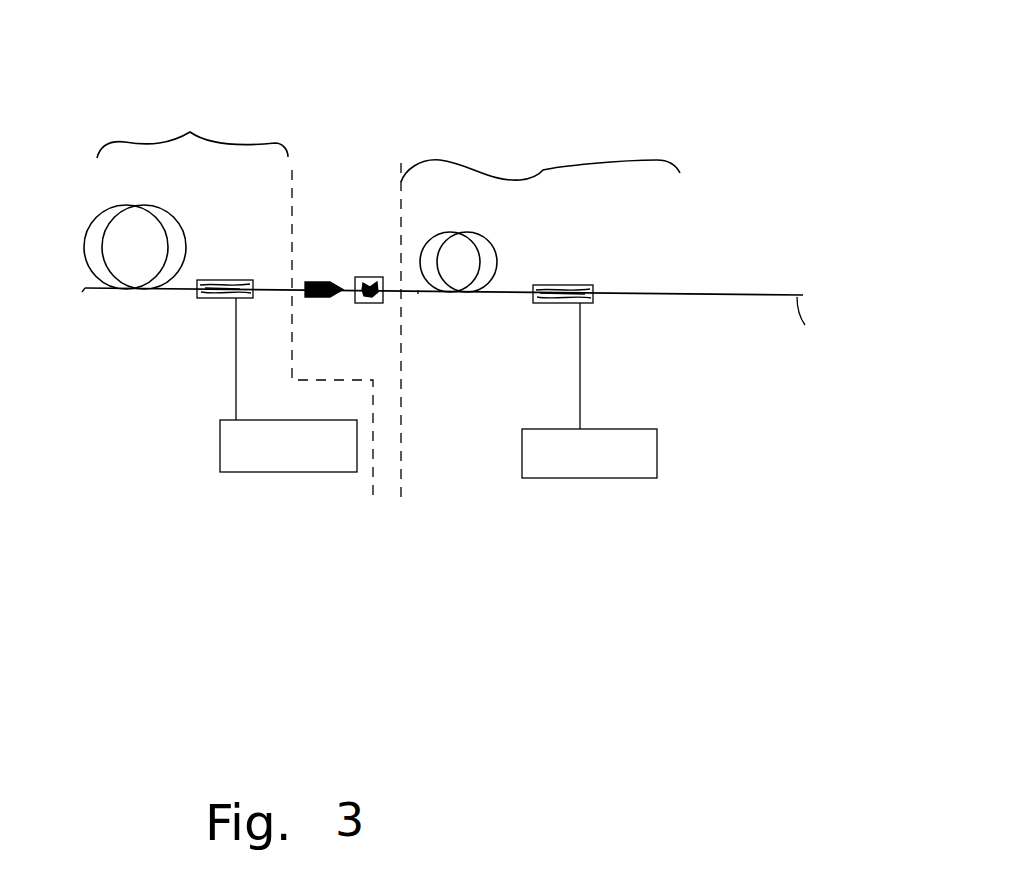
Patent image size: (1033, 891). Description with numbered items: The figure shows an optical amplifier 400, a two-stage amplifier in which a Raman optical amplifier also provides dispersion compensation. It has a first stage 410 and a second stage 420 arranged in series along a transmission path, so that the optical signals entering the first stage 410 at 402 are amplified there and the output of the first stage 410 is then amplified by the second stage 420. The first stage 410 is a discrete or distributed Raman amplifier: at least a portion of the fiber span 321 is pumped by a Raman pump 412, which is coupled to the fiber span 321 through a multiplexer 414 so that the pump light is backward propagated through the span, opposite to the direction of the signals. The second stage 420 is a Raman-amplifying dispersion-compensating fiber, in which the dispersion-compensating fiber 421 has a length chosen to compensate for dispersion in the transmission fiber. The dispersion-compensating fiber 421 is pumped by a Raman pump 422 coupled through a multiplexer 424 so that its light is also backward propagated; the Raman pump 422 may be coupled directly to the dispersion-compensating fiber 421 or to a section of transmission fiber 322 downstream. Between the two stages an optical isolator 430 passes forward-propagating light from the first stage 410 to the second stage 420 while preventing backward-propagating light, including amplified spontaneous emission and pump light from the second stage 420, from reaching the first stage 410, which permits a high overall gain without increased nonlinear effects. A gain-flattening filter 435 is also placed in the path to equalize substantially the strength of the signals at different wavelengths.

The optical amplifier 400 is at (528, 33).
The first stage 410 is at (190, 132).
The second stage 420 is at (543, 170).
The input of first stage 402 is at (82, 293).
The fiber span 321 is at (180, 217).
The multiplexer 414 is at (208, 303).
The Raman pump 412 is at (288, 385).
The optical isolator 430 is at (320, 273).
The gain-flattening filter 435 is at (370, 305).
The dispersion-compensating fiber 421 is at (493, 243).
The multiplexer 424 is at (562, 305).
The Raman pump 422 is at (589, 392).
The transmission fiber 322 is at (831, 340).